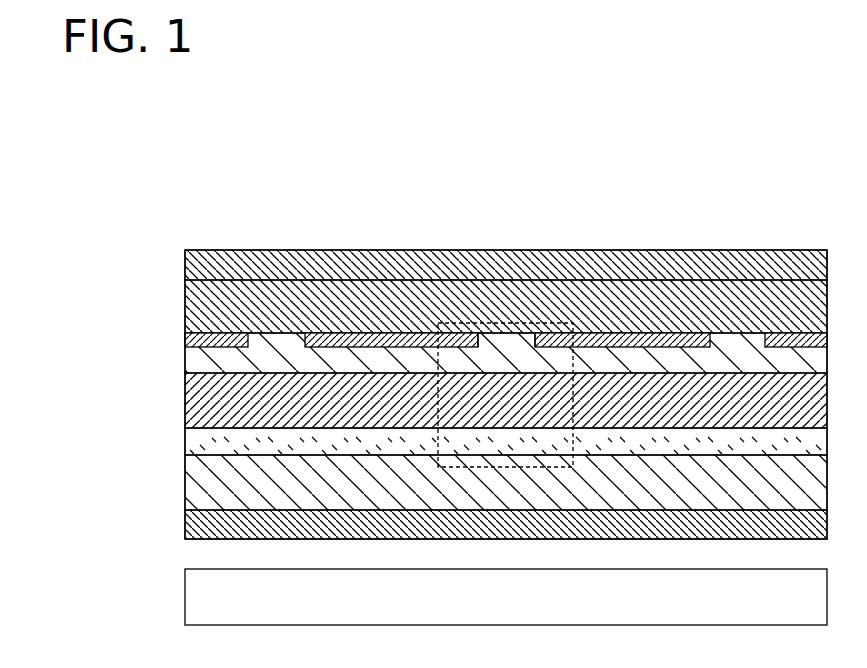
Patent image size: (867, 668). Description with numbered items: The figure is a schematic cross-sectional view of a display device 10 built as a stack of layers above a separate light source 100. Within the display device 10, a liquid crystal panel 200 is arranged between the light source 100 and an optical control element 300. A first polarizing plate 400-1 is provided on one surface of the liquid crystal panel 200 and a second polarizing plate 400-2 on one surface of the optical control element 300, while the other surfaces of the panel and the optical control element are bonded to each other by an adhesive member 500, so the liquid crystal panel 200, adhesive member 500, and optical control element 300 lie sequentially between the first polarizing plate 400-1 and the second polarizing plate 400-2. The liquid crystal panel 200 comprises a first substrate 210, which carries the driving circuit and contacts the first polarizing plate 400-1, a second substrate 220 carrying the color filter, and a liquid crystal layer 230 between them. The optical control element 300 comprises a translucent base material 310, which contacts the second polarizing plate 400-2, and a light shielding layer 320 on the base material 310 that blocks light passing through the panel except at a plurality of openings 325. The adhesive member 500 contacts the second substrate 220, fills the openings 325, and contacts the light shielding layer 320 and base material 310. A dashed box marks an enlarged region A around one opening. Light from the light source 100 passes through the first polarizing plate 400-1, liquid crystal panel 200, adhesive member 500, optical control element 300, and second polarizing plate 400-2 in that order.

The display device 10 is at (159, 138).
The light source 100 is at (205, 598).
The liquid crystal panel 200 is at (442, 442).
The first substrate 210 is at (472, 482).
The second substrate 220 is at (192, 400).
The liquid crystal layer 230 is at (192, 443).
The optical control element 300 is at (442, 290).
The base material 310 is at (192, 303).
The light shielding layer 320 is at (192, 335).
The openings 325 is at (511, 333).
The first polarizing plate 400-1 is at (192, 527).
The second polarizing plate 400-2 is at (192, 266).
The adhesive member 500 is at (192, 362).
The region A is at (573, 400).